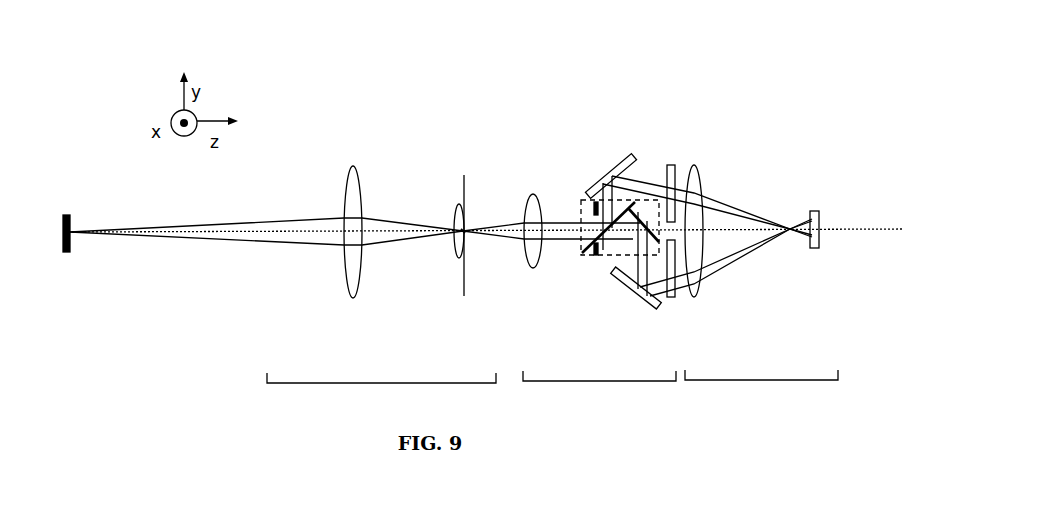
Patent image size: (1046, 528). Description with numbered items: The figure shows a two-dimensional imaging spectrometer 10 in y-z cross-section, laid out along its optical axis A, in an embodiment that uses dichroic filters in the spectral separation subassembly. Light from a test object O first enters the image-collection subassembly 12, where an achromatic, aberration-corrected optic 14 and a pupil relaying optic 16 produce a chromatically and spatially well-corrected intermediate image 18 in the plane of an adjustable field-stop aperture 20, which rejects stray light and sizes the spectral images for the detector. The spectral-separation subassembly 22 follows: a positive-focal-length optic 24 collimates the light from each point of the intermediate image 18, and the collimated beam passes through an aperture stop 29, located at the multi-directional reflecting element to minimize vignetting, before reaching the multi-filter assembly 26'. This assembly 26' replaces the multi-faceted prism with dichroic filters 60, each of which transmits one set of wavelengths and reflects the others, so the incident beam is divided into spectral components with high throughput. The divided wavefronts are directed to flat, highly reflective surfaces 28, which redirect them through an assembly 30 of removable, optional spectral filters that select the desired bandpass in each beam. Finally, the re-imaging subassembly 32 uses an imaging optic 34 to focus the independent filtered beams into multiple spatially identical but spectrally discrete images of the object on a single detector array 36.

The two-dimensional imaging spectrometer 10 is at (633, 72).
The image-collection subassembly 12 is at (325, 380).
The achromatic aberration-corrected optic 14 is at (337, 205).
The pupil relaying optic 16 is at (453, 243).
The intermediate image 18 is at (467, 228).
The adjustable field-stop aperture 20 is at (465, 189).
The spectral-separation subassembly 22 is at (597, 381).
The collimating optic 24 is at (548, 200).
The multi-filter assembly 26' is at (566, 270).
The flat highly reflective surfaces 28 is at (596, 171).
The aperture stop 29 is at (587, 208).
The removable spectral filter assembly 30 is at (668, 163).
The re-imaging subassembly 32 is at (760, 379).
The imaging optic 34 is at (703, 285).
The detector array 36 is at (815, 210).
The dichroic filter 60 is at (603, 243).
The test object O is at (73, 245).
The optical axis A is at (867, 235).